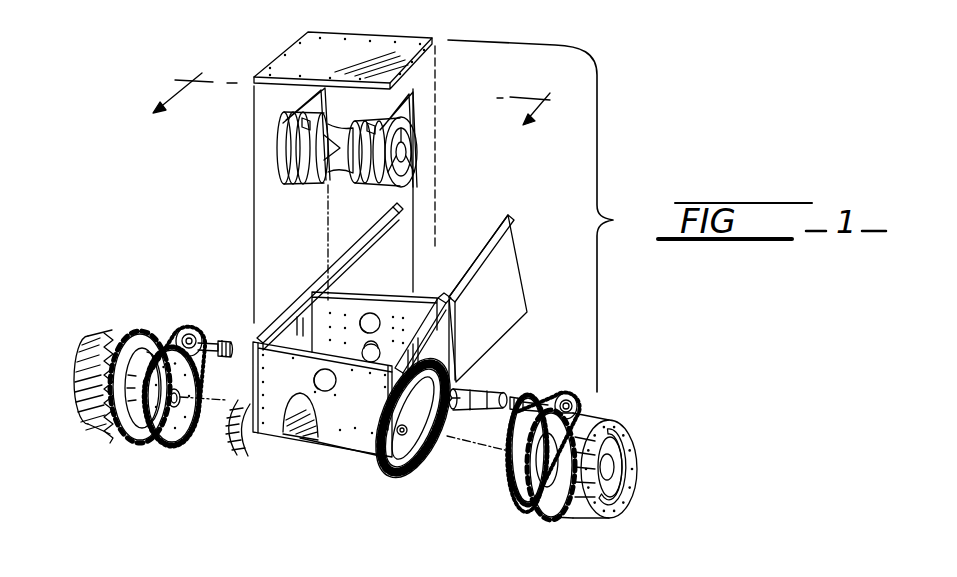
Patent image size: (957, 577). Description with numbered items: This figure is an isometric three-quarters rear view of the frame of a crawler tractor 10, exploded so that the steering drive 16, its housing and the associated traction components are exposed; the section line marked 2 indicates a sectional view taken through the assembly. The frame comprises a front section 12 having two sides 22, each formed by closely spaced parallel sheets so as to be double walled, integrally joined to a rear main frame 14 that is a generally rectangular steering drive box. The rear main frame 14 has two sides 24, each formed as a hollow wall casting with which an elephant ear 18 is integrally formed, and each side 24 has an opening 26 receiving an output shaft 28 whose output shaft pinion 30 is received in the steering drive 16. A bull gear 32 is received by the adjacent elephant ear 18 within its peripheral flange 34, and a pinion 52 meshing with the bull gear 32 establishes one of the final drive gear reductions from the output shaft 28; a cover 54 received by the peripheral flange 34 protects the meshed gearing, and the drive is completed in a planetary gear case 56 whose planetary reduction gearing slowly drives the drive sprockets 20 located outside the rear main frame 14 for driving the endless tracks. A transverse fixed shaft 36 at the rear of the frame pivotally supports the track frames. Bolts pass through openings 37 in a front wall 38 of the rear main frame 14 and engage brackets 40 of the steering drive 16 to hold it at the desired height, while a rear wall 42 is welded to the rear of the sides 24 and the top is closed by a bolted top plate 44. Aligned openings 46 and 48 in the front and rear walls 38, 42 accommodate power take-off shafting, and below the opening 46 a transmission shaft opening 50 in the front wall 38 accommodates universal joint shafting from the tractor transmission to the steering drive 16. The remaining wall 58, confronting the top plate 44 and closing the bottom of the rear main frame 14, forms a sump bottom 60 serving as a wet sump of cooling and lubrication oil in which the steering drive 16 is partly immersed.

The section line 2- 2 is at (351, 102).
The crawler tractor 10 is at (273, 292).
The front section 12 is at (497, 272).
The rear main frame 14 is at (263, 328).
The steering drive 16 is at (417, 143).
The elephant ears 18 is at (250, 413).
The drive sprockets 20 is at (137, 332).
The sides 22 is at (387, 238).
The sides 24 is at (290, 300).
The opening 26 is at (452, 362).
The output shaft 28 is at (210, 340).
The output shaft pinion 30 is at (228, 342).
The bull gear 32 is at (175, 430).
The peripheral flange 34 is at (427, 480).
The transverse fixed shaft 36 is at (493, 390).
The openings 37 is at (330, 317).
The front wall 38 is at (395, 292).
The brackets 40 is at (322, 108).
The rear wall 42 is at (328, 437).
The top plate 44 is at (302, 50).
The opening 46 is at (373, 318).
The opening 48 is at (318, 378).
The transmission shaft opening 50 is at (370, 355).
The pinion 52 is at (185, 327).
The cover 54 is at (167, 437).
The planetary gear case 56 is at (90, 370).
The remaining wall 58 is at (290, 433).
The sump bottom 60 is at (305, 417).